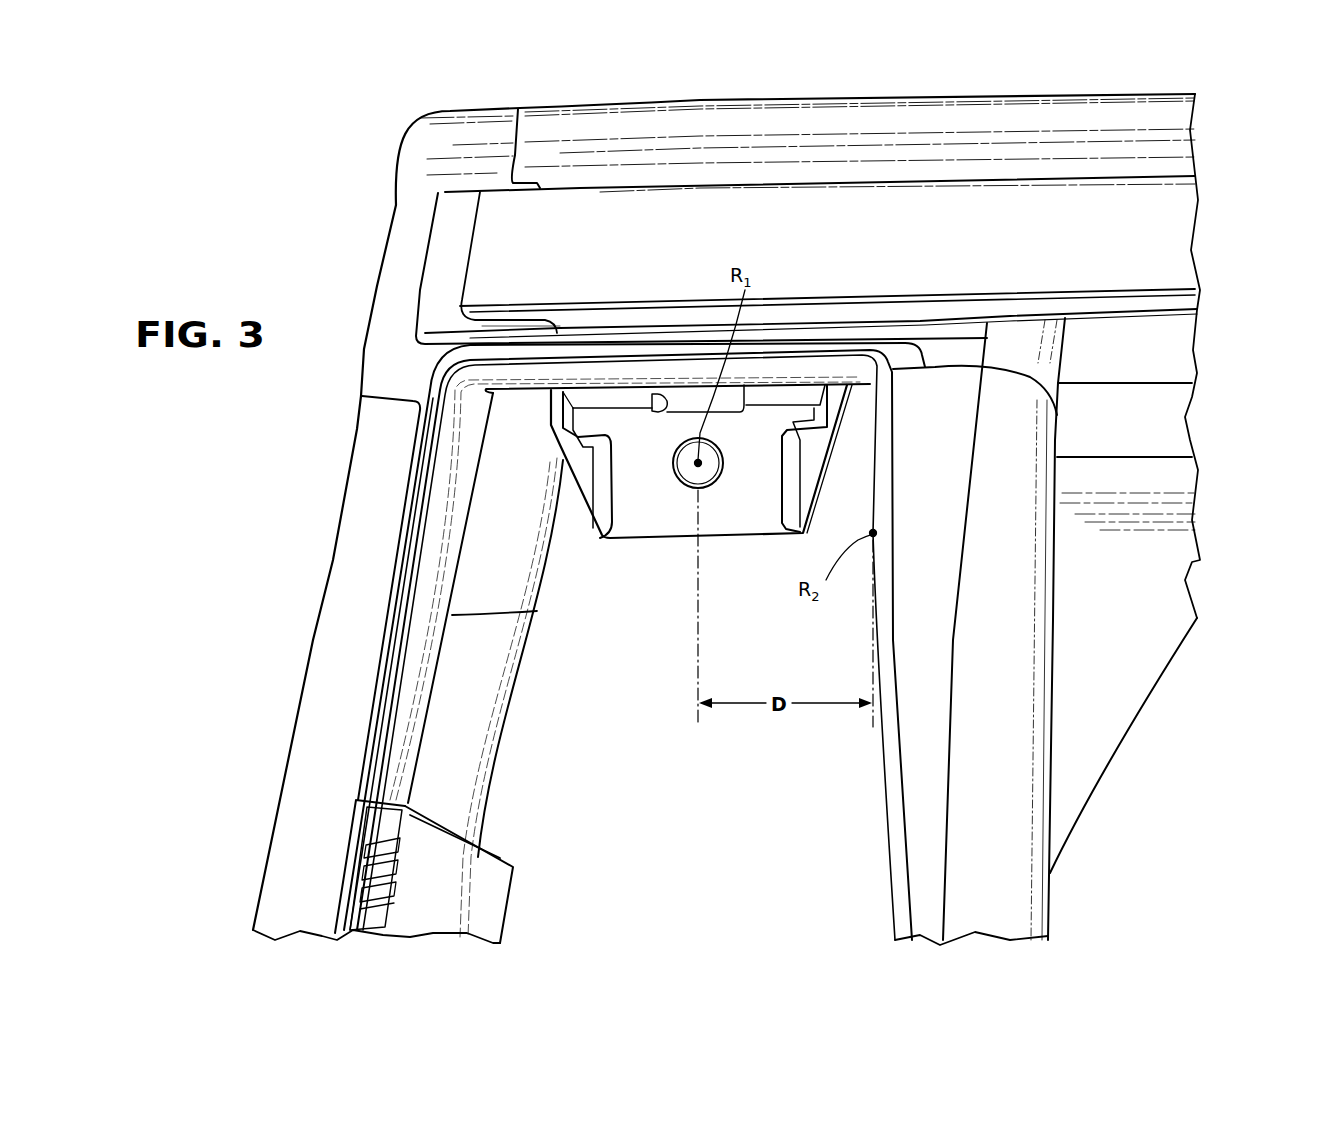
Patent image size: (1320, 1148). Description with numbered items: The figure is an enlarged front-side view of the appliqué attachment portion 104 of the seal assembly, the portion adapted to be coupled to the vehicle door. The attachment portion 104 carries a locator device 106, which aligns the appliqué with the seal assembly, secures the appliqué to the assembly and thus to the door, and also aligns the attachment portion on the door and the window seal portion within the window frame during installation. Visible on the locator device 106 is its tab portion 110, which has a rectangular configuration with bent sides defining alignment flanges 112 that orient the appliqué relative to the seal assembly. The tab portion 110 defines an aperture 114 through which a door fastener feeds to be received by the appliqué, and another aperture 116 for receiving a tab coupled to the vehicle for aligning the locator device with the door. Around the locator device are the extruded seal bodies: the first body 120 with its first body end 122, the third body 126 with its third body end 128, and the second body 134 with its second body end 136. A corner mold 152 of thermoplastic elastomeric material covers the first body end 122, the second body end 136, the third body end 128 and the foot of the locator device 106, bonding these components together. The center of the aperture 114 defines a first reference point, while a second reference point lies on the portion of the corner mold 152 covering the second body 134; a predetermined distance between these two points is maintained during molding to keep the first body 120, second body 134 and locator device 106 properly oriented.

The appliqué attachment portion 104 is at (366, 242).
The locator device 106 is at (628, 552).
The tab portion 110 is at (757, 513).
The alignment flanges 112 is at (602, 458).
The aperture 114 is at (697, 465).
The aperture 116 is at (640, 410).
The first body 120 is at (1130, 233).
The first body end 122 is at (706, 222).
The third body 126 is at (385, 668).
The third body end 128 is at (425, 510).
The second body 134 is at (998, 752).
The second body end 136 is at (1043, 467).
The corner mold 152 is at (473, 694).